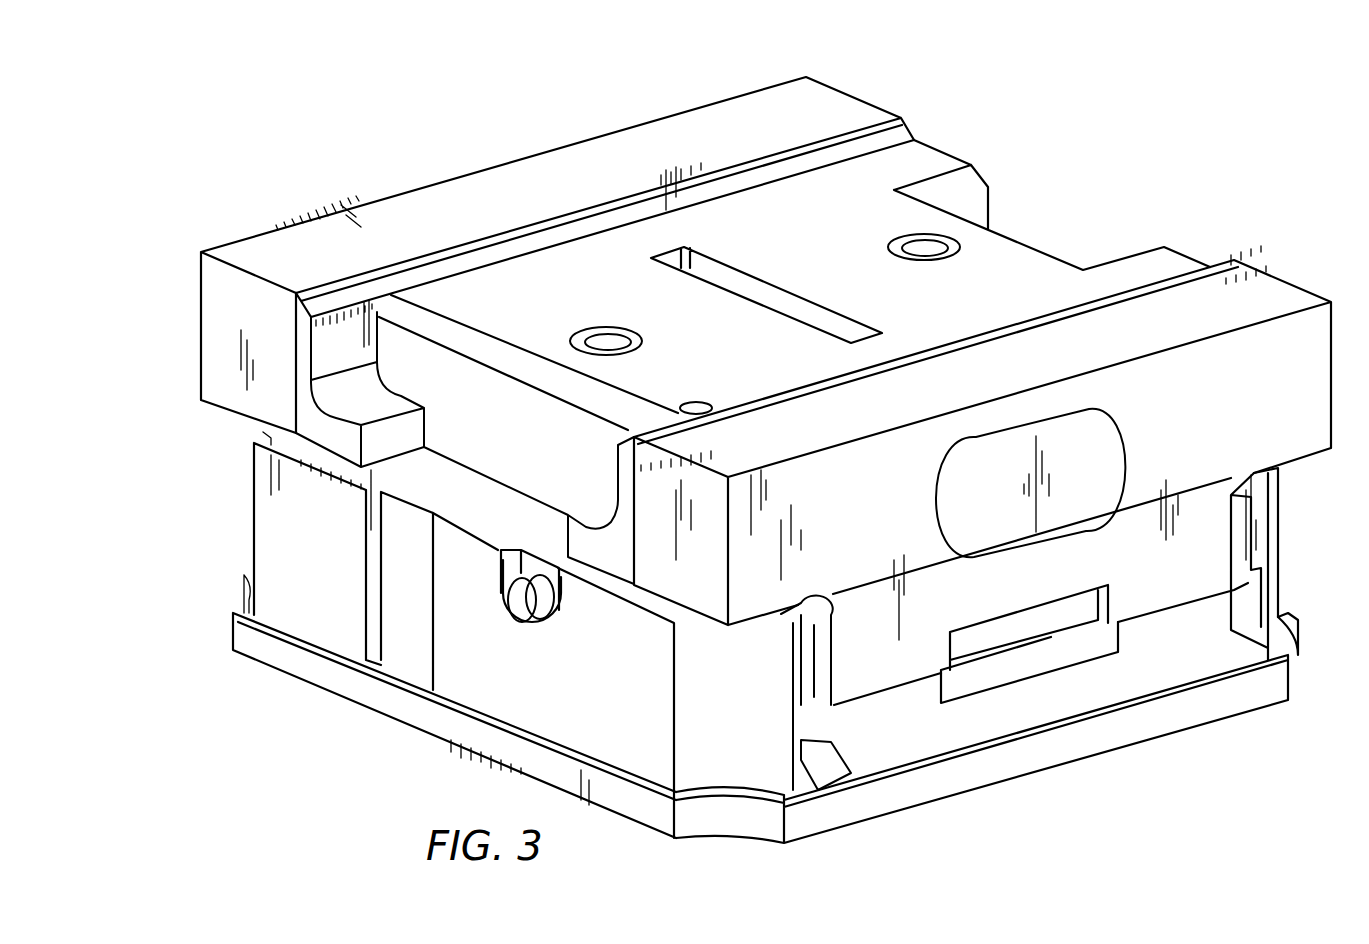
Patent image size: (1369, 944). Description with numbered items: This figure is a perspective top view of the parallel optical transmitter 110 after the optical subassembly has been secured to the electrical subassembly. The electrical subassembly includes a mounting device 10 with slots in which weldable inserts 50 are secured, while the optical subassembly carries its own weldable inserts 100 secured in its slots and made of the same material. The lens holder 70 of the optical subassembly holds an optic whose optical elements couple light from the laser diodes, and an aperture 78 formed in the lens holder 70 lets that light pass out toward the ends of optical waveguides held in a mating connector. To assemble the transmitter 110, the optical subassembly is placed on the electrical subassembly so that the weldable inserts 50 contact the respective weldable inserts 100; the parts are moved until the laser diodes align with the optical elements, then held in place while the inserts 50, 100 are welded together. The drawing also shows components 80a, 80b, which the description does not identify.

The mounting device 10 is at (867, 758).
The weldable inserts 50 is at (1000, 672).
The lens holder 70 is at (1030, 263).
The aperture 78 is at (773, 300).
The first jaw 80a is at (795, 100).
The second jaw 80b is at (1250, 290).
The weldable inserts 100 is at (1055, 618).
The parallel optical transmitter 110 is at (1192, 112).